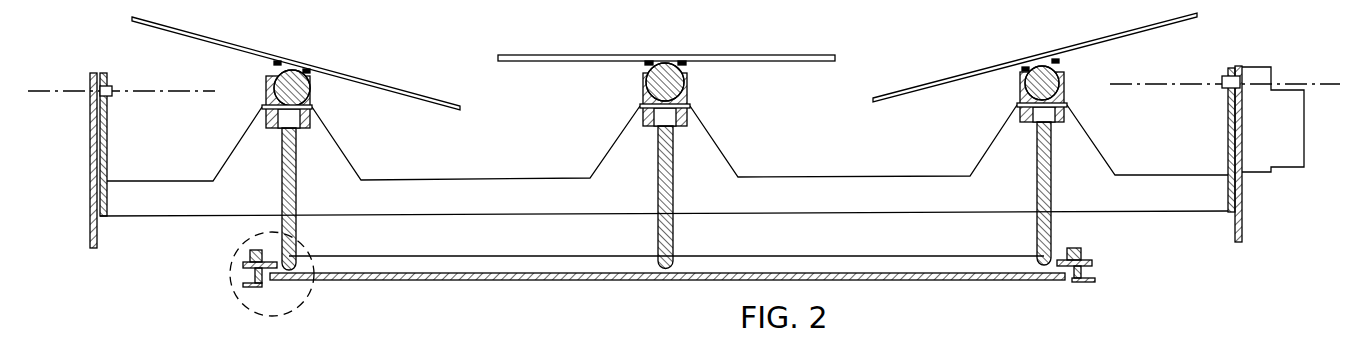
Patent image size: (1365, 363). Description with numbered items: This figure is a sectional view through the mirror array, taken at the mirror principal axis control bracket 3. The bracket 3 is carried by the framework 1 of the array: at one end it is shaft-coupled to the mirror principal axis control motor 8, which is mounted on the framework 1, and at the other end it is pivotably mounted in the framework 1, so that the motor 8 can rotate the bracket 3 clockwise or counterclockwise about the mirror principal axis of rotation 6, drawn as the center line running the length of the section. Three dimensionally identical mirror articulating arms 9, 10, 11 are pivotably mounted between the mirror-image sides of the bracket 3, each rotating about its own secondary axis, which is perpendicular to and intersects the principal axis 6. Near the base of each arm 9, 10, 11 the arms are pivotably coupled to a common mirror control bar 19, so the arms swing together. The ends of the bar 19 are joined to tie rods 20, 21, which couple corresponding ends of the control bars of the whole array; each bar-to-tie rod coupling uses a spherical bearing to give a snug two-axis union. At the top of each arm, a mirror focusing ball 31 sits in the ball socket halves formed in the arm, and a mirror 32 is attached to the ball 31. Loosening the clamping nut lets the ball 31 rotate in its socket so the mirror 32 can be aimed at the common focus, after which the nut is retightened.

The framework 1 is at (97, 234).
The mirror principal axis control bracket 3 is at (108, 133).
The mirror principal axis of rotation 6 is at (88, 91).
The mirror principal axis control motor 8 is at (1305, 127).
The mirror articulating arm 9 is at (311, 97).
The mirror articulating arm 10 is at (689, 93).
The mirror articulating arm 11 is at (1065, 92).
The mirror control bar 19 is at (592, 283).
The tie rod 20 is at (262, 290).
The tie rod 21 is at (1083, 284).
The mirror focusing ball 31 is at (264, 68).
The mirror 32 is at (296, 63).